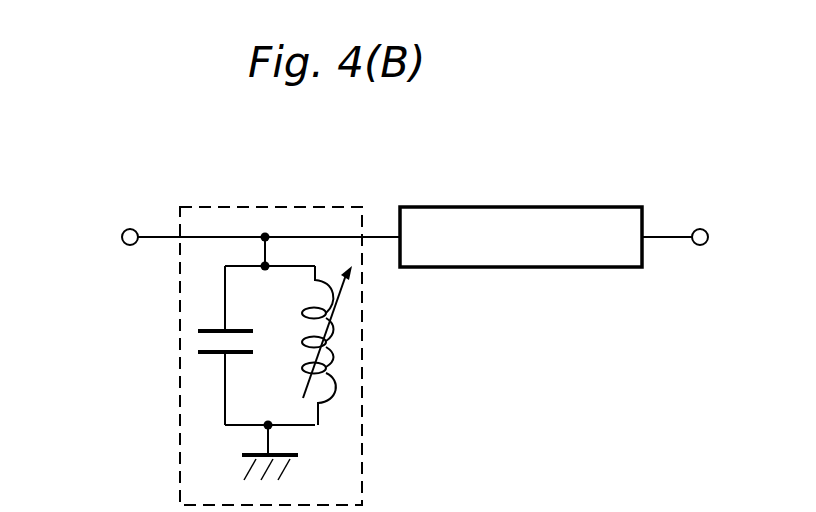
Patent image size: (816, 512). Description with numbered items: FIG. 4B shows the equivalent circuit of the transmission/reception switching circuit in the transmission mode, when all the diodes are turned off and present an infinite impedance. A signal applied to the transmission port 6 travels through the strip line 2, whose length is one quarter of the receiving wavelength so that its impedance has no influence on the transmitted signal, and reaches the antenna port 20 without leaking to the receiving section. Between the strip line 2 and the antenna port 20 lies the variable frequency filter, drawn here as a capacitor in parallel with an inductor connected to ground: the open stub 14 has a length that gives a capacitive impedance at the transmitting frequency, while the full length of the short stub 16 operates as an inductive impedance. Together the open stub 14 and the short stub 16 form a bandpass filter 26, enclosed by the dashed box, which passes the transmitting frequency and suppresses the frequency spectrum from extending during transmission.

The strip line 2 is at (524, 207).
The transmission port 6 is at (700, 246).
The open stub 14 is at (198, 342).
The short stub 16 is at (334, 355).
The antenna port 20 is at (122, 240).
The bandpass filter 26 is at (363, 463).